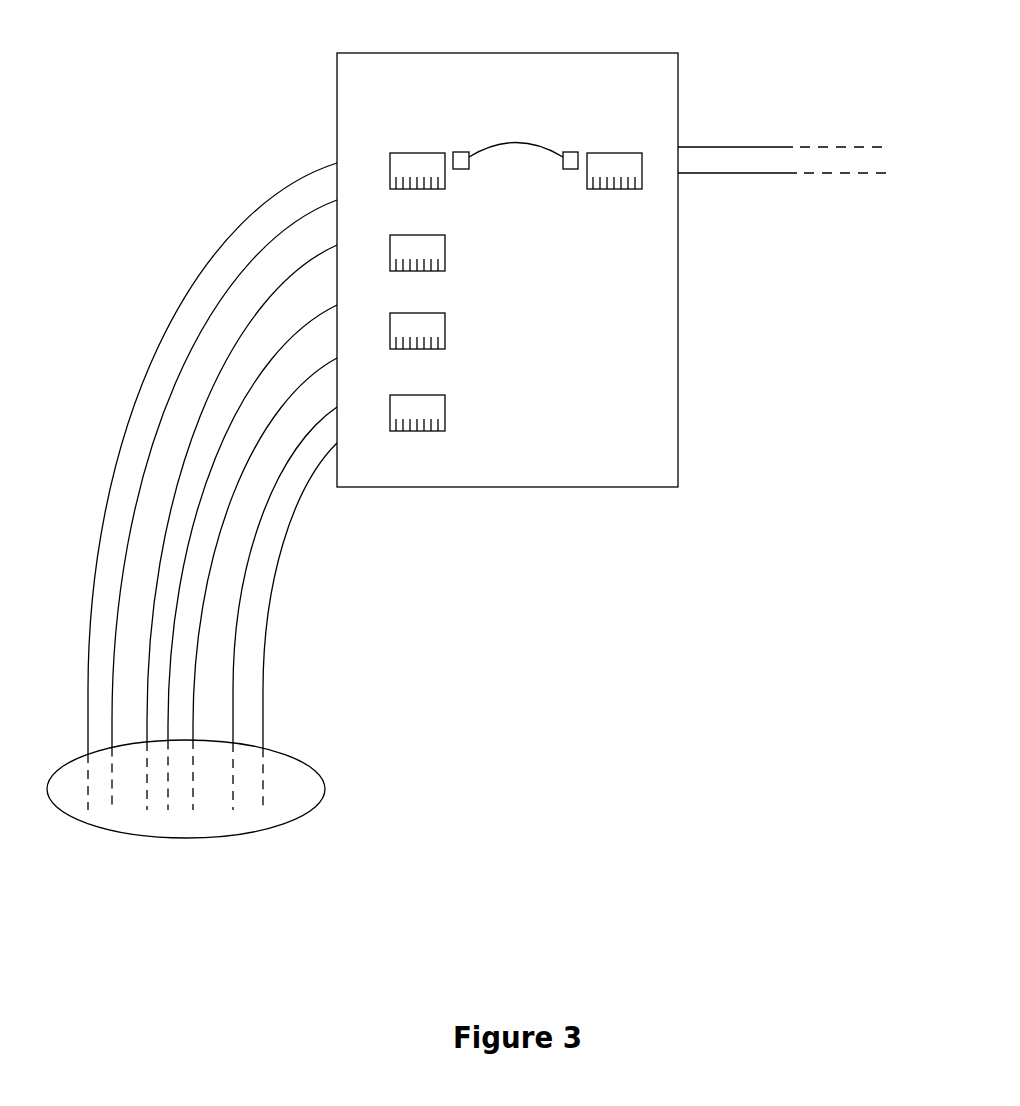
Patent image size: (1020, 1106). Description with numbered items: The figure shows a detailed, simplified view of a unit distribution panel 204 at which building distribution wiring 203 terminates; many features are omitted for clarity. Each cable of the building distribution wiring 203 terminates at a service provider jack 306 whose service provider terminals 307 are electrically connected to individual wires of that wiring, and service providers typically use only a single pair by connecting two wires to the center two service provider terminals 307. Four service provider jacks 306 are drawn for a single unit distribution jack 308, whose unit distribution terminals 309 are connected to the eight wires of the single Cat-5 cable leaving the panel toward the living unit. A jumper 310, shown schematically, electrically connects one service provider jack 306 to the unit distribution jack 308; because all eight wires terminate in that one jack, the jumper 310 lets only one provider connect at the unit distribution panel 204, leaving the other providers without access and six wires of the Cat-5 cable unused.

The building distribution wiring 203 is at (308, 766).
The unit distribution panel 204 is at (678, 79).
The service provider jack 306 is at (391, 160).
The service provider terminals 307 is at (433, 176).
The unit distribution jack 308 is at (593, 147).
The unit distribution terminals 309 is at (630, 175).
The jumper 310 is at (493, 146).
The Cat-5 cable Cat-5 is at (700, 147).